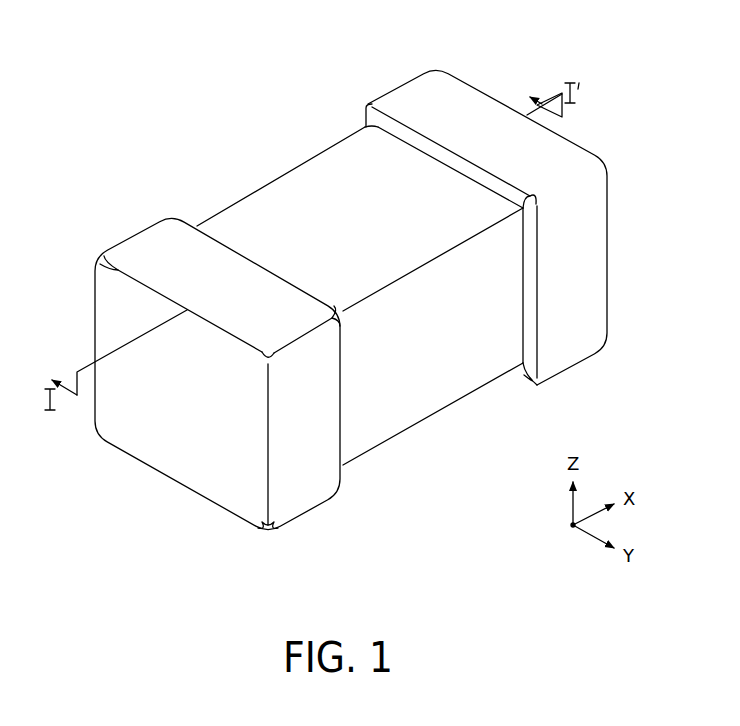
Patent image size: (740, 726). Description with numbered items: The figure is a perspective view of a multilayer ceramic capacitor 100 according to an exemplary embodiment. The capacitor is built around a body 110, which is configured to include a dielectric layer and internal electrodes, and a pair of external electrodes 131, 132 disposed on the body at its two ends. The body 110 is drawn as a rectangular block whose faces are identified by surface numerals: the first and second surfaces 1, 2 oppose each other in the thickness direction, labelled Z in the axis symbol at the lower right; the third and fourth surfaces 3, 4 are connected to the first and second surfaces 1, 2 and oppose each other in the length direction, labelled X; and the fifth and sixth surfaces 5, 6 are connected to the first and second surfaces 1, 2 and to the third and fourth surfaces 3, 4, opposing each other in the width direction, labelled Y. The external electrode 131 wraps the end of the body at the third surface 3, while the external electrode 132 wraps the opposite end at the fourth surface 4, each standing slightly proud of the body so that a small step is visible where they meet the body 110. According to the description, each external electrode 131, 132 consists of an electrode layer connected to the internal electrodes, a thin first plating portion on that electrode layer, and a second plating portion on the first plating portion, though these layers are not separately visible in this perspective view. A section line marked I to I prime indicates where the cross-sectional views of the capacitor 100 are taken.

The multilayer ceramic capacitor 100 is at (152, 77).
The body 110 is at (250, 218).
The first surface 1 is at (391, 390).
The second surface 2 is at (366, 183).
The third surface 3 is at (185, 437).
The fourth surface 4 is at (560, 239).
The fifth surface 5 is at (450, 360).
The sixth surface 6 is at (311, 203).
The external electrode 131 is at (152, 247).
The external electrode 132 is at (408, 103).